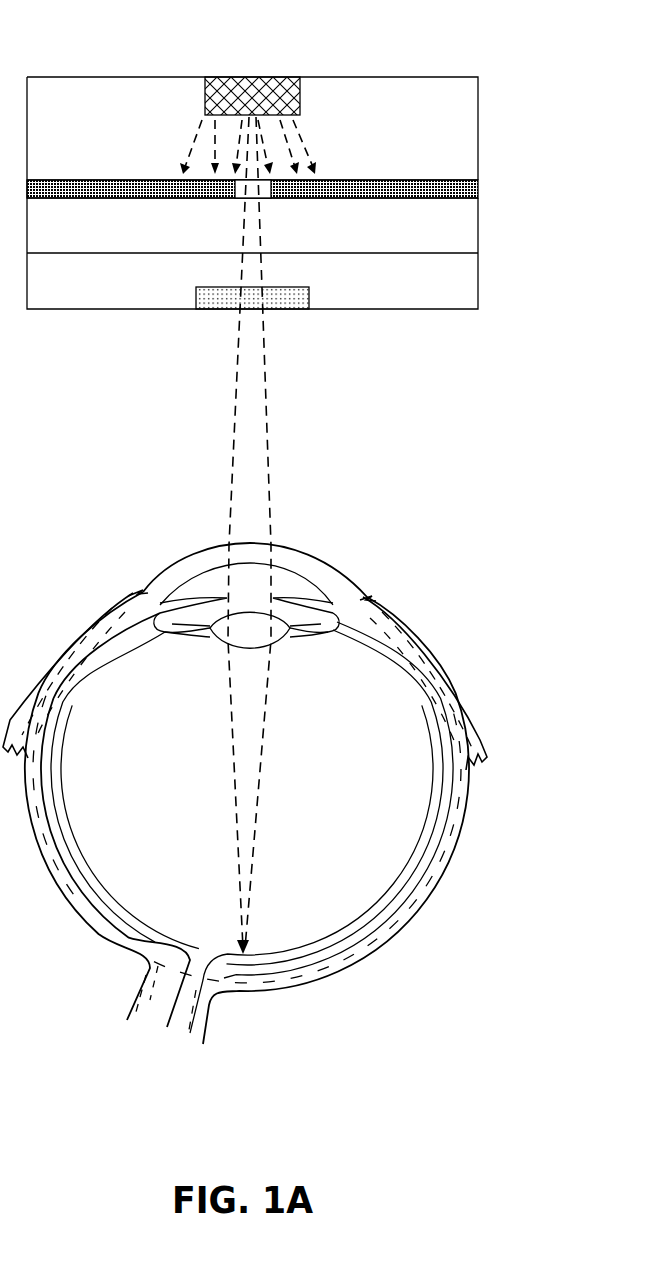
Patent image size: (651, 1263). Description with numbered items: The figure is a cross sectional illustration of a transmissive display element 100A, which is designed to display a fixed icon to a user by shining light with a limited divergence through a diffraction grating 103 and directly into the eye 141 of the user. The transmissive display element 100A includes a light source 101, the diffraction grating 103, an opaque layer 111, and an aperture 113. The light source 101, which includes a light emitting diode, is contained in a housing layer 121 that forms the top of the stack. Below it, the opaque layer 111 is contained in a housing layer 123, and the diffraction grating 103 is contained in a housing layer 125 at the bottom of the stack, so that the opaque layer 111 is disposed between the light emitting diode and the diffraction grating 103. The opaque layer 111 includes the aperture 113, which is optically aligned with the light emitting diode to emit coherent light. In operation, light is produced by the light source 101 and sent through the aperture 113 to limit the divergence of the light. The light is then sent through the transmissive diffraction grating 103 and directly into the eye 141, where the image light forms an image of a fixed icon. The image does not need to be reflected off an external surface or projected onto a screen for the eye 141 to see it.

The transmissive display element 100A is at (70, 23).
The light source 101 is at (252, 77).
The diffraction grating 103 is at (298, 305).
The opaque layer 111 is at (474, 190).
The aperture 113 is at (269, 198).
The housing layer 121 is at (458, 127).
The housing layer 123 is at (458, 225).
The housing layer 125 is at (458, 281).
The eye 141 is at (180, 683).